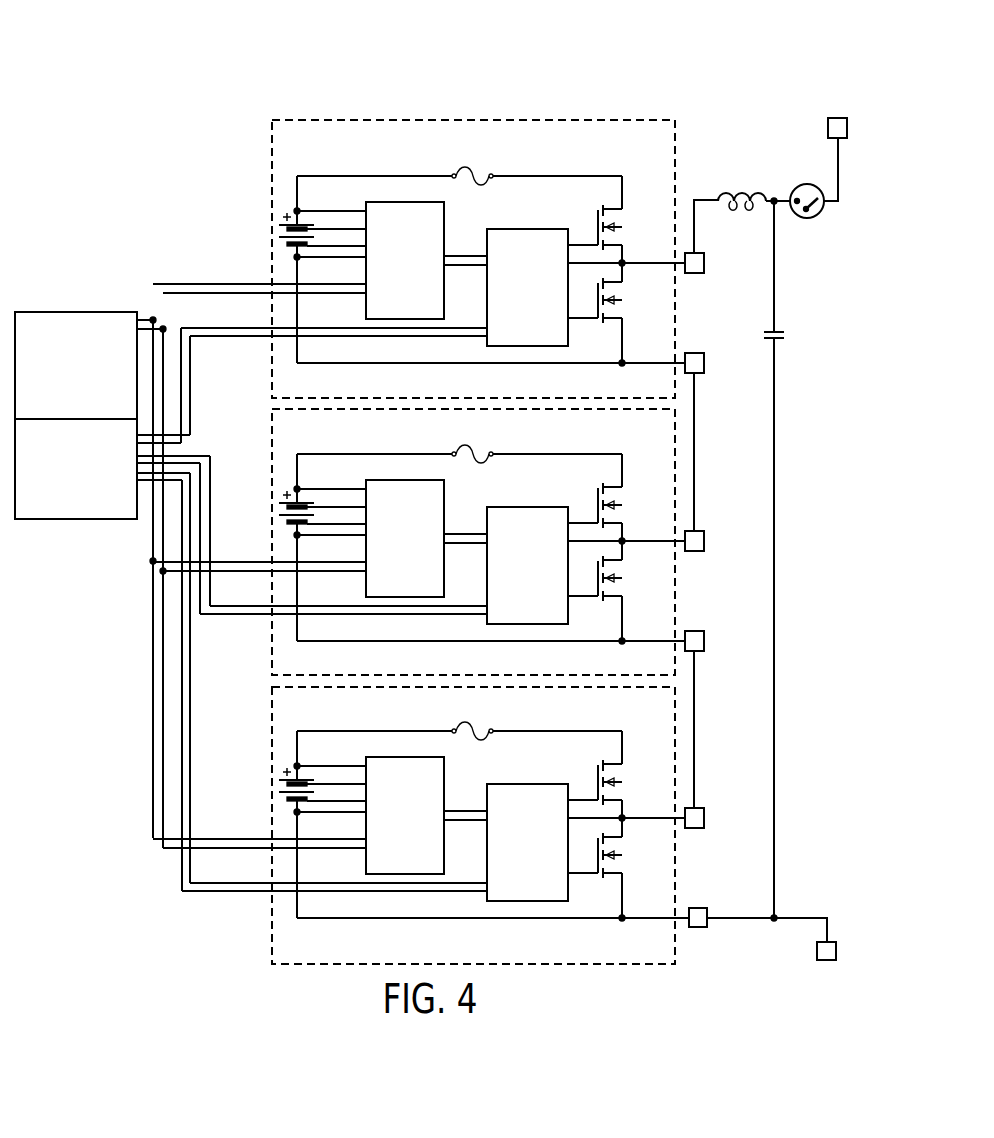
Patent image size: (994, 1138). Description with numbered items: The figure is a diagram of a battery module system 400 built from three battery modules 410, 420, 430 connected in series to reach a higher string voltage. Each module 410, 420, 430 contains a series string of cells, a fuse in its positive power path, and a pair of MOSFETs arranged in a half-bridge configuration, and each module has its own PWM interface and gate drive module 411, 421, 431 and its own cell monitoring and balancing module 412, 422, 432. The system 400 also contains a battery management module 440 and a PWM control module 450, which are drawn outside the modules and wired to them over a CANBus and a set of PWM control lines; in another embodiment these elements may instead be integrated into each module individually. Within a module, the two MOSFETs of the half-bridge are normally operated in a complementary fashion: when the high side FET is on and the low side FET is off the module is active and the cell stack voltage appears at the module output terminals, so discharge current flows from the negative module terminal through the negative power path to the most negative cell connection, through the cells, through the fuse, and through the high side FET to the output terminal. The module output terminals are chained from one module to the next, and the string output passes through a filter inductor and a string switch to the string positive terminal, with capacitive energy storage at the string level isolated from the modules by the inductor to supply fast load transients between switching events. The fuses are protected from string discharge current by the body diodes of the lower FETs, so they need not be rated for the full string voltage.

The battery module system 400 is at (193, 80).
The battery module 410 is at (490, 819).
The PWM interface and Gate Drive module 411 is at (527, 795).
The Cell Monitoring and Balancing module 412 is at (405, 781).
The battery module 420 is at (440, 536).
The PWM interface and Gate Drive module 421 is at (527, 518).
The Cell Monitoring and Balancing module 422 is at (405, 504).
The battery module 430 is at (287, 143).
The PWM interface and Gate Drive module 431 is at (524, 229).
The Cell Monitoring and Balancing module 432 is at (409, 201).
The battery management module 440 is at (73, 318).
The PWM control module 450 is at (80, 513).